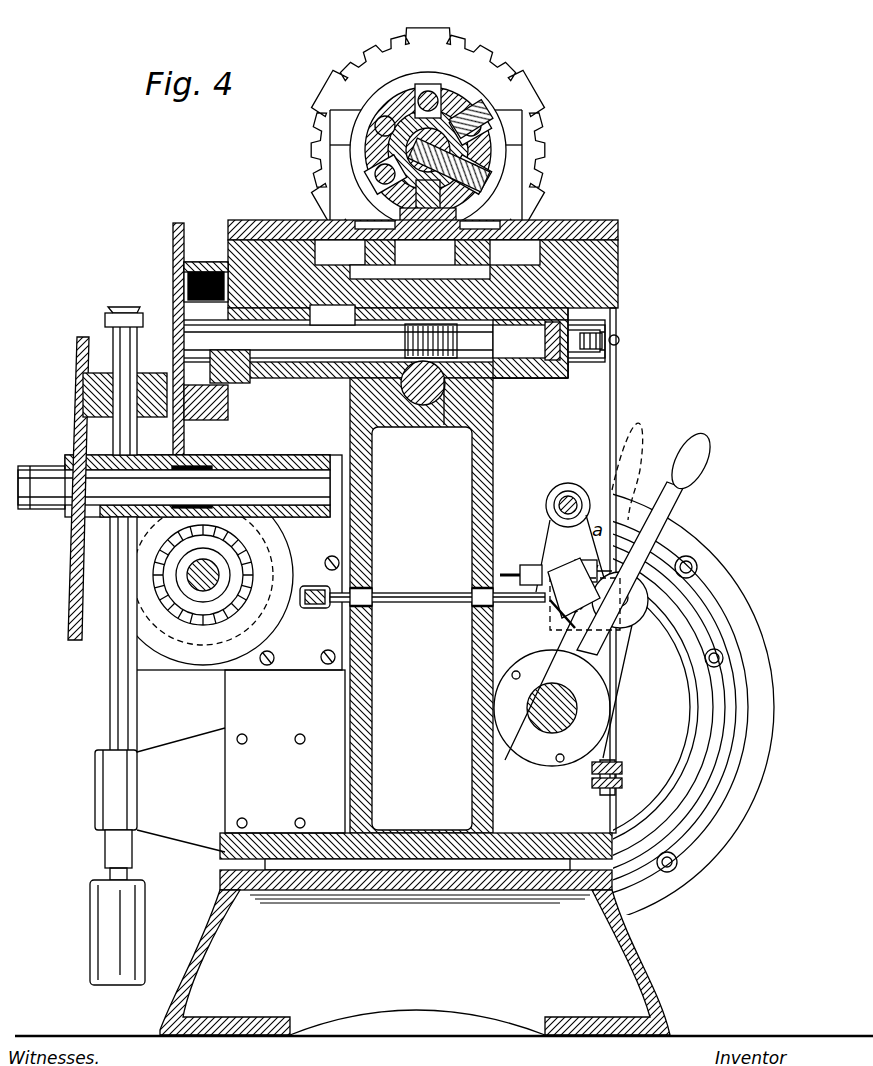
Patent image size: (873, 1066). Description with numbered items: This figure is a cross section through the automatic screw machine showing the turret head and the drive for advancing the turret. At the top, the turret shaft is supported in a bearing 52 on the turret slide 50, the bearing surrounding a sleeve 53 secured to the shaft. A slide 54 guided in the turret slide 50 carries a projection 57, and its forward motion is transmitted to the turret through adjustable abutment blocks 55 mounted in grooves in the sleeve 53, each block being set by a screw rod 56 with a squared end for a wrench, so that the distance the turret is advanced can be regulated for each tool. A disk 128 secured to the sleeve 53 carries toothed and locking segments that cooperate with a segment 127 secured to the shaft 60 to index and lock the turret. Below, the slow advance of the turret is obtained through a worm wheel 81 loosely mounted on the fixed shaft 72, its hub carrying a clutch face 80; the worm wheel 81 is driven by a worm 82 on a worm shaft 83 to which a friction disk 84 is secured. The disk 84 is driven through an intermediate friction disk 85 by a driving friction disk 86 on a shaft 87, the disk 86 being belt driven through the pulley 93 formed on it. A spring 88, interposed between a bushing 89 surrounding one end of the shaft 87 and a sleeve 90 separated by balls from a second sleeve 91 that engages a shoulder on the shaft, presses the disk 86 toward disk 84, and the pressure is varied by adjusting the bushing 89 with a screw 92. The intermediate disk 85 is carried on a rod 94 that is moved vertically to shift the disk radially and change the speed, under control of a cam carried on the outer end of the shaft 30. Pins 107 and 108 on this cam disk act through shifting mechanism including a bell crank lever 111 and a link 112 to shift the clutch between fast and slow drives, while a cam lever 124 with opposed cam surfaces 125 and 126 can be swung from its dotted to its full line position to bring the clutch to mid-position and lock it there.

The disk 128 is at (470, 66).
The bearing 52 is at (403, 78).
The sleeve 53 is at (458, 150).
The slide 54 is at (458, 218).
The blocks 55 is at (480, 116).
The screw rods 56 is at (462, 116).
The projection 57 is at (452, 206).
The turret slide 50 is at (541, 222).
The shaft 60 is at (418, 400).
The fixed shaft 72 is at (222, 580).
The clutch face 80 is at (250, 566).
The worm wheel 81 is at (255, 620).
The worm 82 is at (238, 462).
The worm shaft 83 is at (288, 488).
The friction disk 84 is at (78, 374).
The friction disk 85 is at (86, 346).
The friction disk 86 is at (172, 262).
The shaft 87 is at (332, 357).
The spring 88 is at (450, 398).
The bushing 89 is at (518, 376).
The sleeve 90 is at (405, 330).
The sleeve 91 is at (356, 313).
The screw 92 is at (600, 352).
The pulley 93 is at (197, 262).
The rod 94 is at (110, 686).
The pins 107 is at (697, 566).
The pins 108 is at (726, 658).
The bell crank lever 111 is at (330, 592).
The link 112 is at (406, 595).
The cam lever 124 is at (660, 526).
The cam surface 125 is at (578, 604).
The cam surface 126 is at (562, 612).
The segment 127 is at (572, 566).
The shaft 30 is at (545, 728).